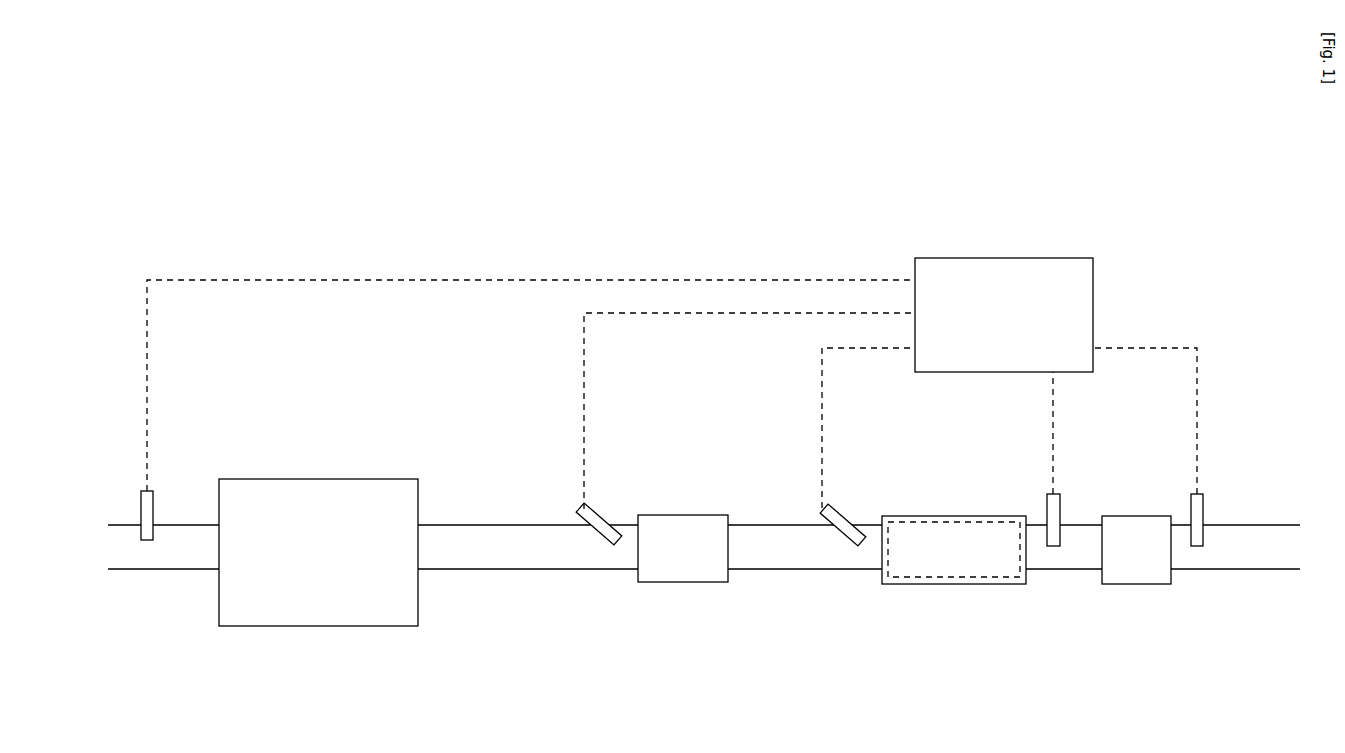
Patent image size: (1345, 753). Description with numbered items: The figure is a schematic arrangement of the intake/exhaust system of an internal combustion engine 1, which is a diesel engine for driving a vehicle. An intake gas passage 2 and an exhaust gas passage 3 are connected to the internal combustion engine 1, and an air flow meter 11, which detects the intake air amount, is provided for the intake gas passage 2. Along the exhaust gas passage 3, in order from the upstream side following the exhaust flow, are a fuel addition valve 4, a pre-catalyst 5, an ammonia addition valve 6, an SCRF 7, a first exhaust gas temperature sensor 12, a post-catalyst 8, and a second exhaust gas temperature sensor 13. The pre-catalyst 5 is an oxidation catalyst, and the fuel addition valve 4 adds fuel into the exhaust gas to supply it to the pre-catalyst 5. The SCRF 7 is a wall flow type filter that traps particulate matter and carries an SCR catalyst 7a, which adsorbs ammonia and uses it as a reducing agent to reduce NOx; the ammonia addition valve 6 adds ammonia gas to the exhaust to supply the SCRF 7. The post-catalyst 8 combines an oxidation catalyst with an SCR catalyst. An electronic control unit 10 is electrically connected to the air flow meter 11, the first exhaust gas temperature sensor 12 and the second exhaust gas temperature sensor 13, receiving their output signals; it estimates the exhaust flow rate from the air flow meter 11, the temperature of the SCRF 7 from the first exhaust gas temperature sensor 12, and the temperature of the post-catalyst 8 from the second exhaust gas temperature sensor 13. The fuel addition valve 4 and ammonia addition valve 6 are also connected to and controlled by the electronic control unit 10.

The internal combustion engine 1 is at (318, 479).
The intake gas passage 2 is at (157, 569).
The exhaust gas passage 3 is at (505, 570).
The fuel addition valve 4 is at (598, 513).
The pre-catalyst 5 is at (693, 582).
The ammonia addition valve 6 is at (843, 507).
The SCRF 7 is at (954, 552).
The SCR catalyst 7a is at (943, 520).
The post-catalyst 8 is at (1133, 584).
The electronic control unit 10 is at (1093, 307).
The air flow meter 11 is at (154, 497).
The first exhaust gas temperature sensor 12 is at (1060, 505).
The second exhaust gas temperature sensor 13 is at (1203, 505).